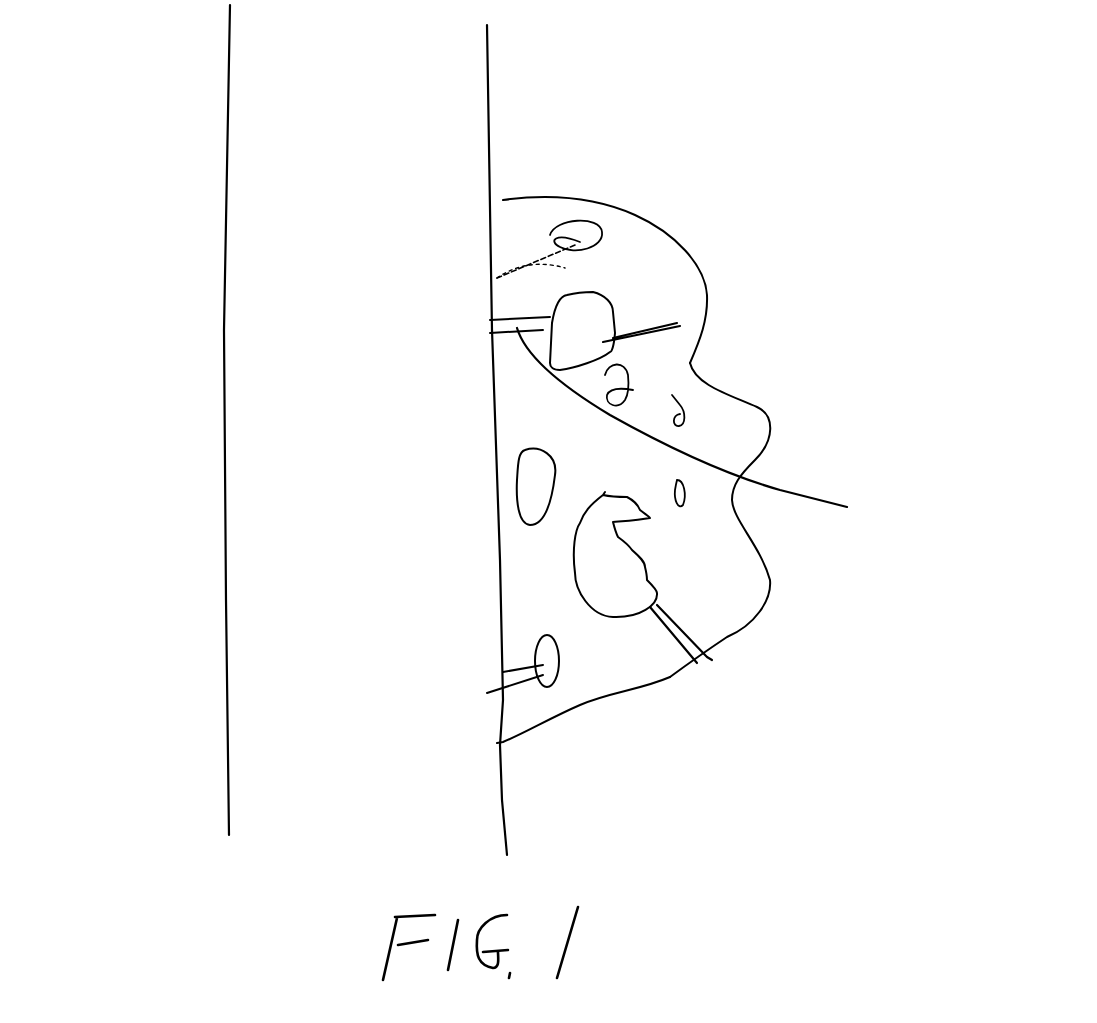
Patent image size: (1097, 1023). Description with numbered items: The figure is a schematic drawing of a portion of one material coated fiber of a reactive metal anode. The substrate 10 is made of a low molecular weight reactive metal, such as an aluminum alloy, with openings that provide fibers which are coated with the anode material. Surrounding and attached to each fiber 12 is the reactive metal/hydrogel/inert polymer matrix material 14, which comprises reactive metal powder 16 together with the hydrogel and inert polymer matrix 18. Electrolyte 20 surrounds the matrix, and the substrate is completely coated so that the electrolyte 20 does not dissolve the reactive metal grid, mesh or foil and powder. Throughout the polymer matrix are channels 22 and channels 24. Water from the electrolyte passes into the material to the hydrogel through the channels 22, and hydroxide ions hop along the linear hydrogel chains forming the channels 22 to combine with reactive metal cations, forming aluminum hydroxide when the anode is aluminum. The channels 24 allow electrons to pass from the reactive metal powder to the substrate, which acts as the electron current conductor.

The substrate 10 is at (774, 54).
The fiber 12 is at (198, 392).
The reactive metal/hydrogel/inert polymer matrix material 14 is at (570, 183).
The reactive metal powder 16 is at (622, 597).
The hydrogel and inert polymer matrix 18 is at (717, 430).
The electrolyte 20 is at (948, 412).
The channels 22 is at (680, 323).
The channels 24 is at (860, 495).